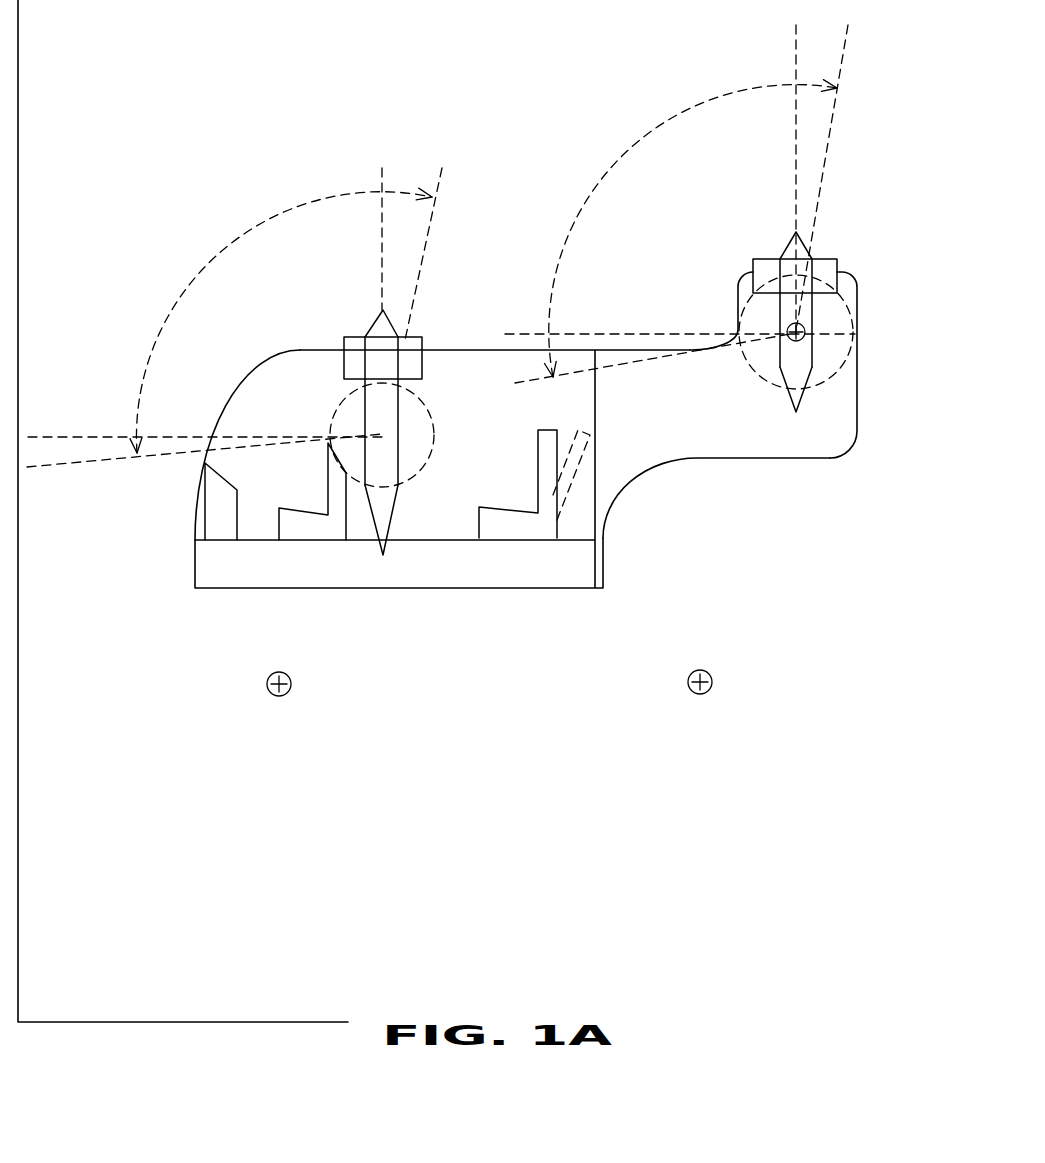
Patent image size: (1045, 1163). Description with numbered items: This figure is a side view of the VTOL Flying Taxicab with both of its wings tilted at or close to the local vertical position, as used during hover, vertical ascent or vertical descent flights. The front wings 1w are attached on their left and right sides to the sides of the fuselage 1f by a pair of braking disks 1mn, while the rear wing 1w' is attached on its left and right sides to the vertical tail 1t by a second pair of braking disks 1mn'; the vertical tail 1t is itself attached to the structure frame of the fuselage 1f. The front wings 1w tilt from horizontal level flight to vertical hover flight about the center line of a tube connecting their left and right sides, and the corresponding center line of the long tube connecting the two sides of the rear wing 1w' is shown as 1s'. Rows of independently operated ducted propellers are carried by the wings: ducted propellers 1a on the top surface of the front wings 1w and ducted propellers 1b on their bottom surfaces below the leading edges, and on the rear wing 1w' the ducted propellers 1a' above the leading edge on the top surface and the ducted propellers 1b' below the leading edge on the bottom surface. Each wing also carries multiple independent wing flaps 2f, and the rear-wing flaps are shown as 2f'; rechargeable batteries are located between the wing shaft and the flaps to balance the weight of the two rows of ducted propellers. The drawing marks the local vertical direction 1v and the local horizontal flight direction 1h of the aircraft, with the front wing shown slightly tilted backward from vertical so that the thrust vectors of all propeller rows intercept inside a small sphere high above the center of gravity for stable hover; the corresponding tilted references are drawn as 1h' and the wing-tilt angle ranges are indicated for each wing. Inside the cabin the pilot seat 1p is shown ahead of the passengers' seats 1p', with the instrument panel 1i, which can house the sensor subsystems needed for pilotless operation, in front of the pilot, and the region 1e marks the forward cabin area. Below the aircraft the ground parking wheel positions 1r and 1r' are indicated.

The front wing-top surface ducted propellers 1a is at (416, 380).
The rear-wing top surface ducted propellers 1a' is at (853, 294).
The front wing-bottom surface ducted propellers 1b is at (361, 329).
The rear-wing bottom surface ducted propellers 1b' is at (752, 252).
The first working region of workpiece 1e is at (448, 570).
The fuselage 1f is at (655, 451).
The local horizontal flight direction 1h is at (412, 385).
The tilted horizontal reference axis 1h' is at (441, 398).
The instrument panel 1i is at (210, 522).
The front wings braking disks 1mn is at (262, 353).
The rear wings braking disks 1mn' is at (706, 388).
The pilot seat 1p is at (275, 513).
The passenger's seats 1p' is at (534, 506).
The ground parking wheel positions 1r is at (315, 701).
The second reference point 1r' is at (665, 695).
The rear-wing center line tube 1s' is at (851, 343).
The vertical tail 1t is at (737, 287).
The local vertical direction 1v is at (382, 215).
The front-wings left and right 1w is at (339, 432).
The rear-wing left and right 1w' is at (770, 277).
The wing flaps 2f is at (365, 536).
The tool tip in second position 2f' is at (763, 409).